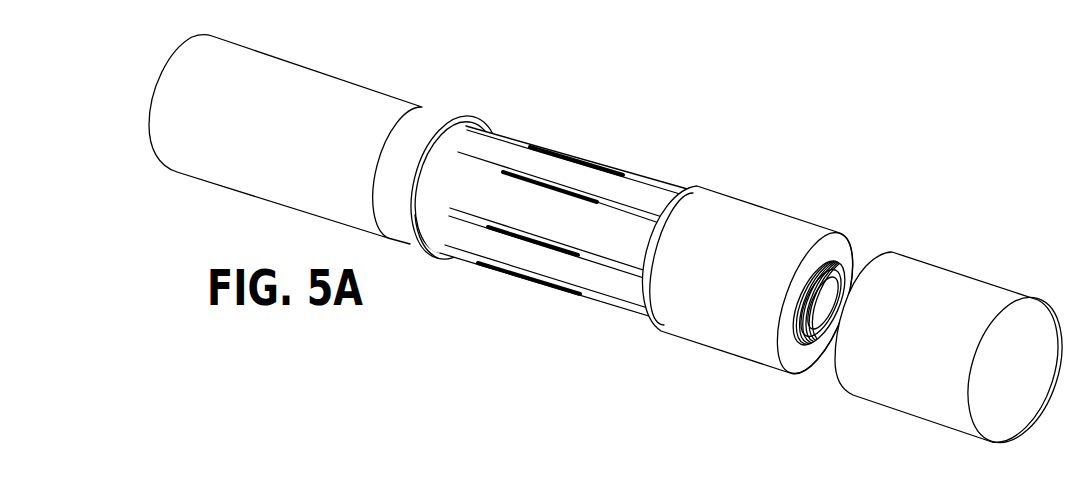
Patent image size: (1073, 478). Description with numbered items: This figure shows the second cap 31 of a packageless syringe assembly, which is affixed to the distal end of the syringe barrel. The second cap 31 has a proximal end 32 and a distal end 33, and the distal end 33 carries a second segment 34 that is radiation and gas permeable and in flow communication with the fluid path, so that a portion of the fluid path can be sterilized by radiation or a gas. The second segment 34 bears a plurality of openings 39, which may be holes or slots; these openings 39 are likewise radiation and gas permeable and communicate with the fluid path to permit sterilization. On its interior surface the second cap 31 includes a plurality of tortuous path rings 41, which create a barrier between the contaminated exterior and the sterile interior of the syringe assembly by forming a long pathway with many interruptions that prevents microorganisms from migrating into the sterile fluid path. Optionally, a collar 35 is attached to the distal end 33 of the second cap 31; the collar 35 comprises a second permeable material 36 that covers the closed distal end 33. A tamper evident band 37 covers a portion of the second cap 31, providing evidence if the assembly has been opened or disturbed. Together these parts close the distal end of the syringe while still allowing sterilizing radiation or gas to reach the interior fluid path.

The second cap 31 is at (736, 70).
The proximal end 32 is at (768, 215).
The distal end 33 is at (430, 262).
The second segment 34 is at (570, 175).
The collar 35 is at (468, 113).
The second permeable material 36 is at (302, 78).
The tamper evident band 37 is at (953, 287).
The plurality of openings 39 is at (548, 244).
The tortuous path rings 41 is at (832, 282).